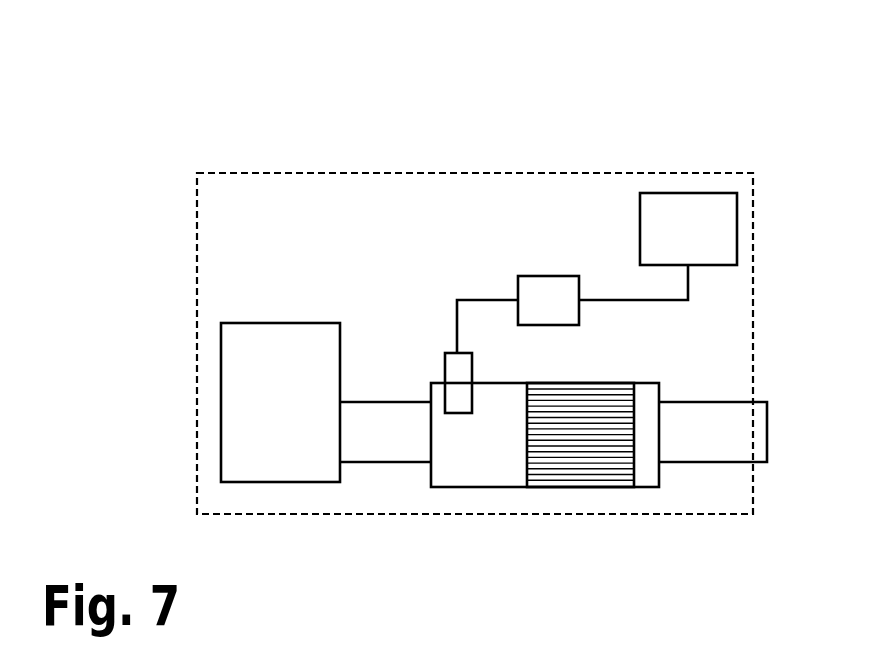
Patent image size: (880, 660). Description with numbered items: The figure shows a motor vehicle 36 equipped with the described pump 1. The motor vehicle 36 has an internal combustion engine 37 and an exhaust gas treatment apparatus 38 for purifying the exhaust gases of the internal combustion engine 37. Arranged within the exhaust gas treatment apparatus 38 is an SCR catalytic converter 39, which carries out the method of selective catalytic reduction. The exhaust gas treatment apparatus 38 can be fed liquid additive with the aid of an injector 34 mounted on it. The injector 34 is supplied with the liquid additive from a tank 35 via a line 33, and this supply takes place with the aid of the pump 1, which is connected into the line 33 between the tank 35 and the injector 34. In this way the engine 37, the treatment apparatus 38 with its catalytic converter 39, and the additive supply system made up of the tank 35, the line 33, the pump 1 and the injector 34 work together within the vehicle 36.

The motor vehicle 36 is at (178, 126).
The internal combustion engine 37 is at (321, 323).
The exhaust gas treatment apparatus 38 is at (487, 487).
The SCR catalytic converter 39 is at (636, 462).
The injector 34 is at (444, 353).
The pump 1 is at (545, 276).
The tank 35 is at (699, 193).
The line 33 is at (640, 300).